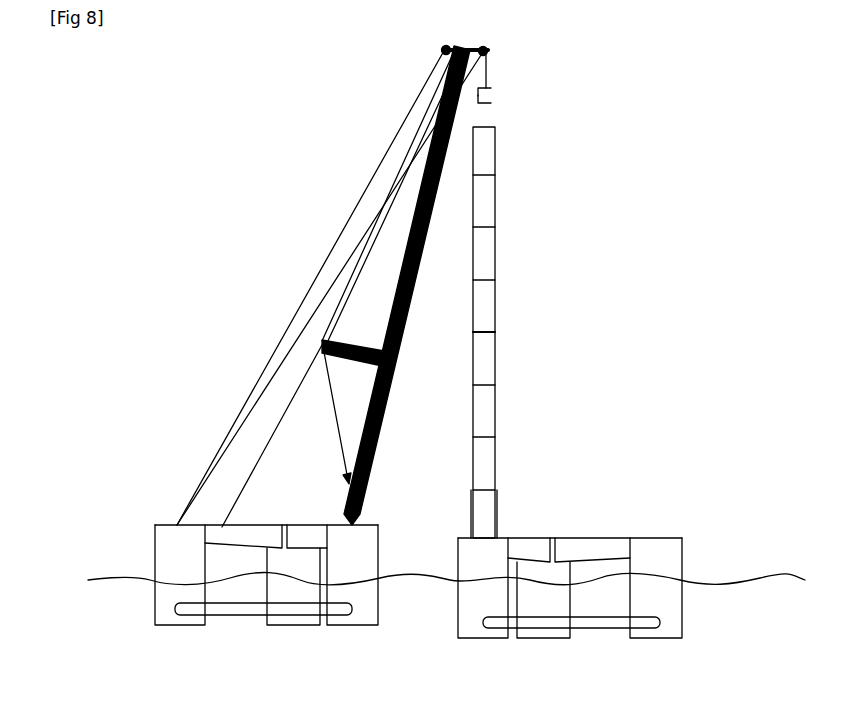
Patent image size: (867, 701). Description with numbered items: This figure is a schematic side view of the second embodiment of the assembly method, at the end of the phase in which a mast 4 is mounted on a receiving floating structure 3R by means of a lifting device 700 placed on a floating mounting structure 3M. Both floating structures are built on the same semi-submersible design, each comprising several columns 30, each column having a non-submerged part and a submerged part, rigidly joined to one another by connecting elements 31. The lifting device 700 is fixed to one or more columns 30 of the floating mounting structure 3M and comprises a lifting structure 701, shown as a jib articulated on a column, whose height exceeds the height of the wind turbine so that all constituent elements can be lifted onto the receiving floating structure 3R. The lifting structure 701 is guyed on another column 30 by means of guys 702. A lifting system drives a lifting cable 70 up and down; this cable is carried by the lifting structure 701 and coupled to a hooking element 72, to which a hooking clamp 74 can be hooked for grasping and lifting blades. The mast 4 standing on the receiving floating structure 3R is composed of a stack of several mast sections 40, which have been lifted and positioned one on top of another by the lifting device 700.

The floating mounting structure 3M is at (148, 531).
The receiving floating structure 3R is at (692, 546).
The column 30 is at (167, 595).
The connecting element 31 is at (225, 536).
The mast 4 is at (500, 350).
The mast section 40 is at (489, 422).
The lifting cable 70 is at (489, 64).
The hooking element 72 is at (490, 88).
The hooking clamp 74 is at (490, 102).
The lifting device 700 is at (393, 280).
The lifting structure 701 is at (387, 420).
The guys 702 is at (277, 428).